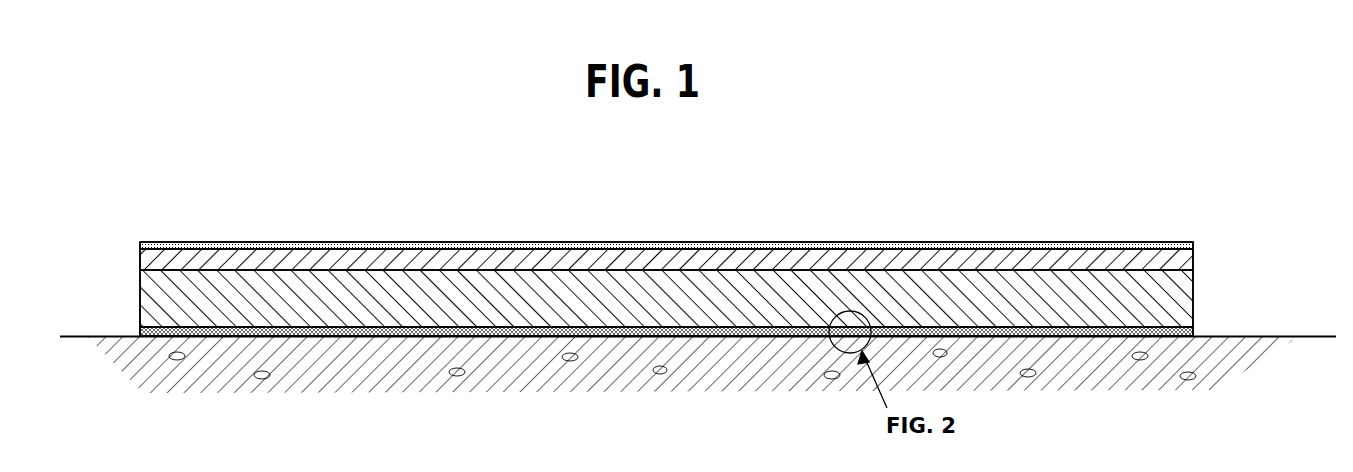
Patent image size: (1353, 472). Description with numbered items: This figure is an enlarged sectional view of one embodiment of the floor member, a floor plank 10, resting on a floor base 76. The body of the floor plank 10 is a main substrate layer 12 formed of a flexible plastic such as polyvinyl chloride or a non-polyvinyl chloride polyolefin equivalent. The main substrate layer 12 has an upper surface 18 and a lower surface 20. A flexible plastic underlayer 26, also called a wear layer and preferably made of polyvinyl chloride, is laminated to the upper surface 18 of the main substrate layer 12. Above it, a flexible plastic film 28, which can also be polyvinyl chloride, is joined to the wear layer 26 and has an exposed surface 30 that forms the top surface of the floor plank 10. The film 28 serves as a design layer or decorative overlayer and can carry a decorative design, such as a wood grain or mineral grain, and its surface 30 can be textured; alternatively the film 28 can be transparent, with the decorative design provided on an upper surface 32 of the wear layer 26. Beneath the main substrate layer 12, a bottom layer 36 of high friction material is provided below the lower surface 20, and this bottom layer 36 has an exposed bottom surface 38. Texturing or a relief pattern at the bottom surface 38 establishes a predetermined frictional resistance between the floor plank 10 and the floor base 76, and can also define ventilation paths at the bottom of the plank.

The floor plank 10 is at (1060, 192).
The main substrate layer 12 is at (140, 313).
The upper surface 18 is at (240, 268).
The lower surface 20 is at (148, 337).
The flexible plastic underlayer 26 is at (140, 262).
The flexible plastic film 28 is at (140, 243).
The exposed surface 30 is at (420, 243).
The upper surface 32 is at (555, 249).
The bottom layer 36 is at (1197, 330).
The exposed bottom surface 38 is at (1102, 337).
The floor base 76 is at (1262, 336).